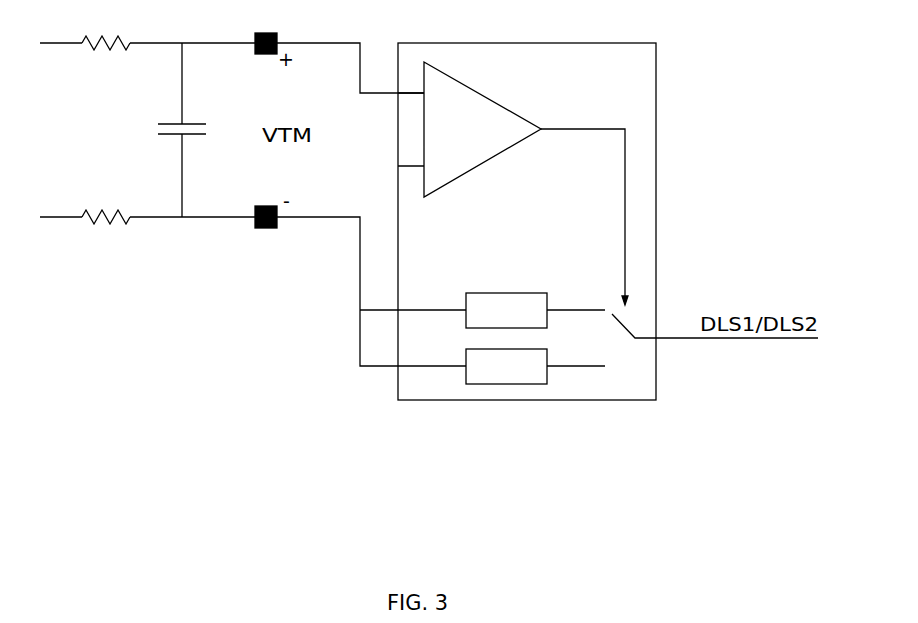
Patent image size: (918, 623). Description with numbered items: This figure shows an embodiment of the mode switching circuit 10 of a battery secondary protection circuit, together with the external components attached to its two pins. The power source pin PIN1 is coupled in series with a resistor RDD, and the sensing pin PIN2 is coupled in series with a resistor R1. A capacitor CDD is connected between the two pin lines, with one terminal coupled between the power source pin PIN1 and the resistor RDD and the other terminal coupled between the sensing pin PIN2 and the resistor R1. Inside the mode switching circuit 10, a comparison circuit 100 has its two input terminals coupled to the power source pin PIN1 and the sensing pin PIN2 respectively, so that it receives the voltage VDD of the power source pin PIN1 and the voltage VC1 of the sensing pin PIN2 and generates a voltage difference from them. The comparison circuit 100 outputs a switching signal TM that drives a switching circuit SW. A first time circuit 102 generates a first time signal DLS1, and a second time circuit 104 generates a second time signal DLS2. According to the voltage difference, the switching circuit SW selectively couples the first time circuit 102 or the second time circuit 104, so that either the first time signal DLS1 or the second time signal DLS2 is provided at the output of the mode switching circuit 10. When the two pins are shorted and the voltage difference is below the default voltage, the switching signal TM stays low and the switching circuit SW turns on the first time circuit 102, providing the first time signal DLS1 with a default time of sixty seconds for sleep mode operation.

The mode switching circuit 10 is at (641, 72).
The comparison circuit 100 is at (486, 141).
The first time circuit 102 is at (527, 322).
The second time circuit 104 is at (527, 378).
The resistor RDD is at (105, 31).
The resistor R1 is at (106, 232).
The capacitor CDD is at (142, 129).
The voltage of the power source pin VDD is at (267, 33).
The voltage of the sensing pin VC1 is at (267, 230).
The power source pin PIN1 is at (227, 59).
The sensing pin PIN2 is at (227, 204).
The switching signal TM is at (584, 205).
The switching circuit SW is at (704, 331).
The first time signal DLS1 is at (580, 296).
The second time signal DLS2 is at (580, 377).